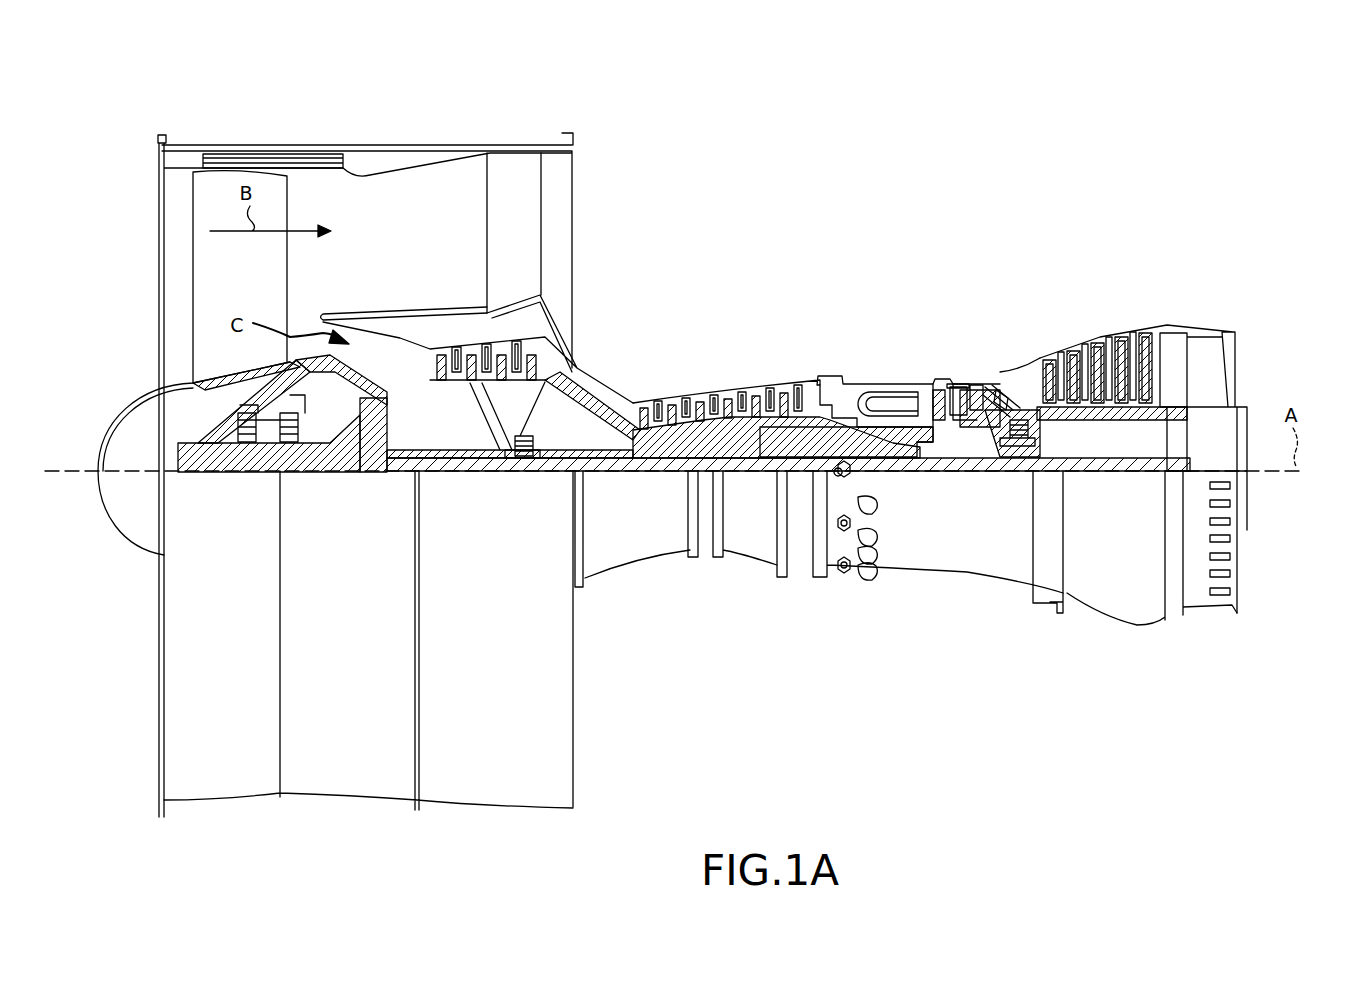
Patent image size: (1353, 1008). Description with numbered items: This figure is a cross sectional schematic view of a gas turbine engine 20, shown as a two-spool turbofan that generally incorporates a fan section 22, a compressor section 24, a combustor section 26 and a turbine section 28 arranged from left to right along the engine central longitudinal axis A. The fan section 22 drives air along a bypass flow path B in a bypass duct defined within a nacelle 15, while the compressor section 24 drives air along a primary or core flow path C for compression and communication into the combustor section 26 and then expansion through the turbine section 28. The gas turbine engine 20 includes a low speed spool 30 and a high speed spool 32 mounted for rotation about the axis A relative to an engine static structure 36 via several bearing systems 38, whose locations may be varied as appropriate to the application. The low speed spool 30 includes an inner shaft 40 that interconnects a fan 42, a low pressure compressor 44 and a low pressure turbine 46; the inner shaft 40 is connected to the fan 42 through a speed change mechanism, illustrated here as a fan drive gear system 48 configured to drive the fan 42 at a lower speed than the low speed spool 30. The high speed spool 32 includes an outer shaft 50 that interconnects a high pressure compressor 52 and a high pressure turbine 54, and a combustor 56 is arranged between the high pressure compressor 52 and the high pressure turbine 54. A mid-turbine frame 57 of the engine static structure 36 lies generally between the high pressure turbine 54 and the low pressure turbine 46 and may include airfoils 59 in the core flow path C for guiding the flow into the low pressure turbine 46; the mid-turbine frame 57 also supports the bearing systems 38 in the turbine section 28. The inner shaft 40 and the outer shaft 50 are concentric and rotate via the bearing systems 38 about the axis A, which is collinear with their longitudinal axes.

The nacelle 15 is at (362, 158).
The gas turbine engine 20 is at (920, 156).
The fan section 22 is at (272, 124).
The compressor section 24 is at (625, 352).
The combustor section 26 is at (882, 338).
The turbine section 28 is at (1055, 298).
The low speed spool 30 is at (753, 471).
The high speed spool 32 is at (812, 428).
The engine static structure 36 is at (803, 548).
The bearing systems 38 is at (524, 471).
The inner shaft 40 is at (597, 472).
The fan 42 is at (248, 270).
The low pressure compressor 44 is at (500, 360).
The low pressure turbine 46 is at (1101, 350).
The fan drive gear system 48 is at (375, 463).
The outer shaft 50 is at (877, 452).
The high pressure compressor 52 is at (753, 393).
The high pressure turbine 54 is at (953, 380).
The combustor 56 is at (904, 392).
The mid-turbine frame 57 is at (1010, 366).
The airfoils 59 is at (1010, 399).